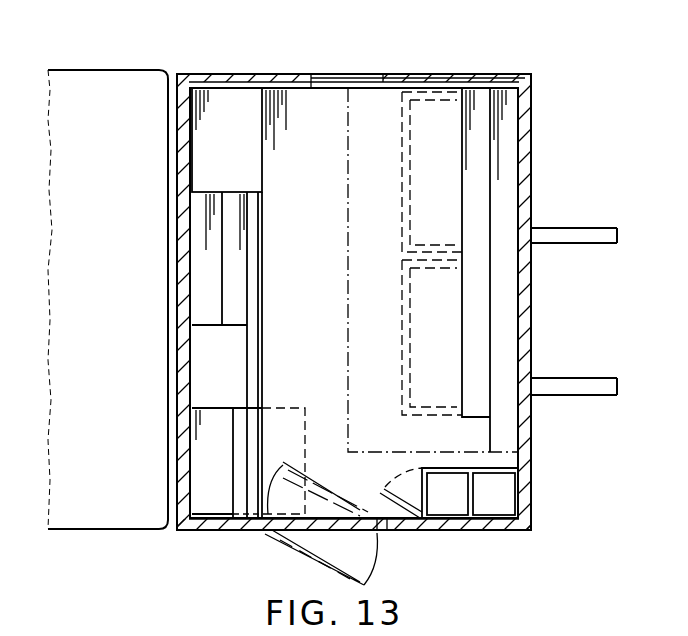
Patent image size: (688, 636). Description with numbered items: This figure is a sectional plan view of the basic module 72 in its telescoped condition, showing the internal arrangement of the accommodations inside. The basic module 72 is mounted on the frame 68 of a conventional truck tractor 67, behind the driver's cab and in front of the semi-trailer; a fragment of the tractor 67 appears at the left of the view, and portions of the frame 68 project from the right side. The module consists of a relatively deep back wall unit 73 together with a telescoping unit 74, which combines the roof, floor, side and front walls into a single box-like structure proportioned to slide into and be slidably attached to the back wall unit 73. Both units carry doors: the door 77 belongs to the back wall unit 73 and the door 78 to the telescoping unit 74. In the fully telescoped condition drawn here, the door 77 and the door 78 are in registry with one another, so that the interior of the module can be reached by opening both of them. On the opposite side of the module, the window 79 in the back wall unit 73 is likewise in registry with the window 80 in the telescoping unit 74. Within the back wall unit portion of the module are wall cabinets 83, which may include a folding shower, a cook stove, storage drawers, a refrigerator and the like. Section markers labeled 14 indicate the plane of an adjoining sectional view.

The section line 14- 14 is at (131, 461).
The truck tractor 67 is at (118, 530).
The frame 68 is at (567, 382).
The basic module 72 is at (434, 73).
The back wall unit 73 is at (216, 75).
The telescoping unit 74 is at (531, 490).
The door 77 is at (376, 536).
The door 78 is at (328, 514).
The window 79 is at (340, 74).
The window 80 is at (345, 90).
The wall cabinets 83 is at (262, 250).